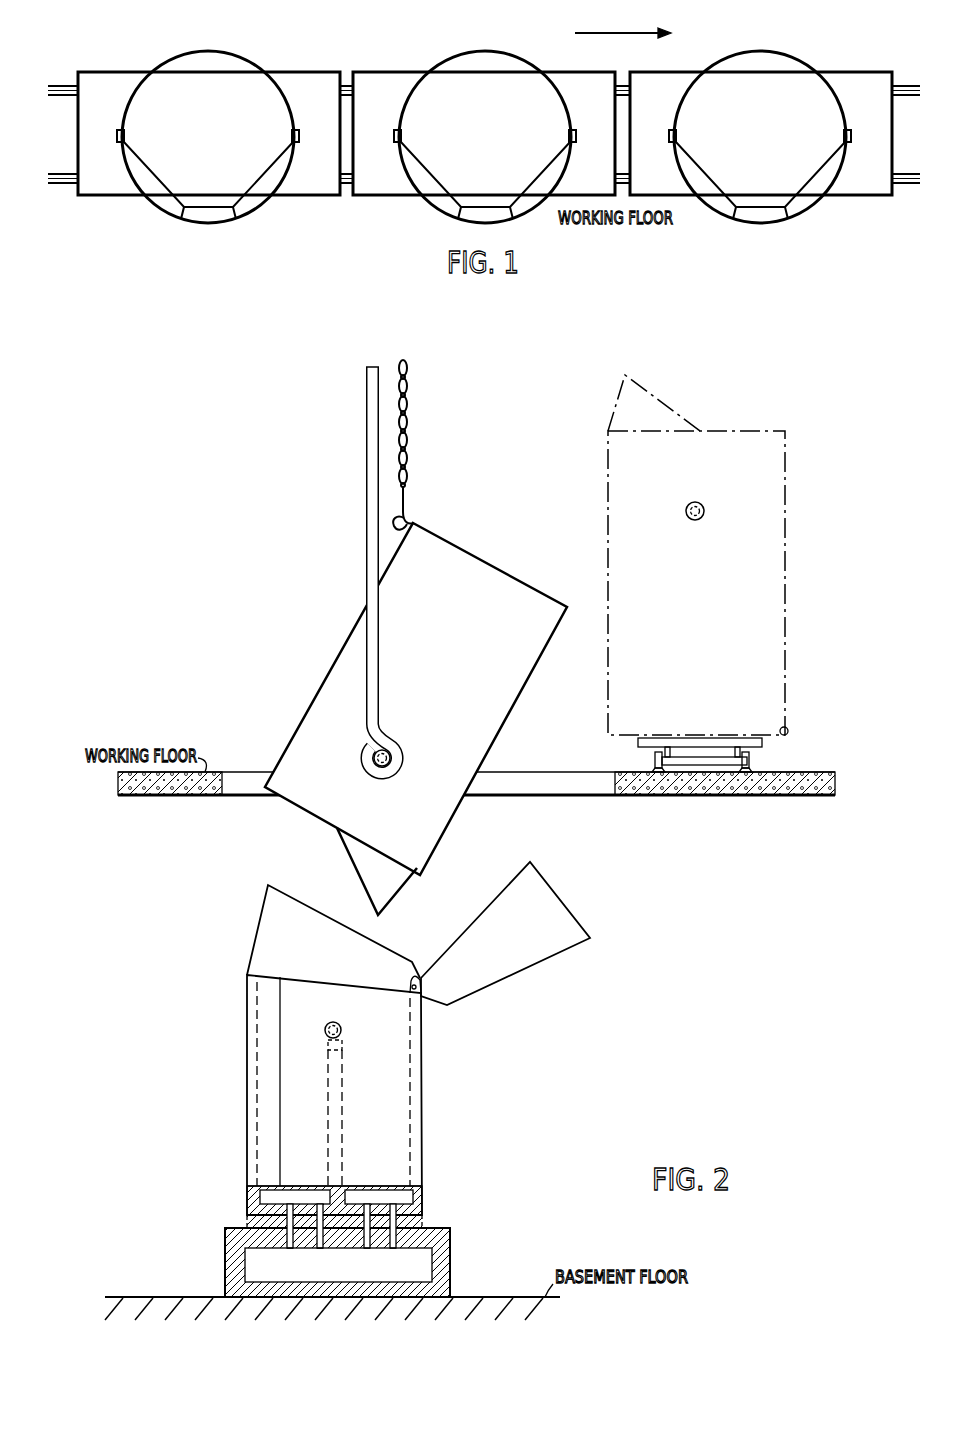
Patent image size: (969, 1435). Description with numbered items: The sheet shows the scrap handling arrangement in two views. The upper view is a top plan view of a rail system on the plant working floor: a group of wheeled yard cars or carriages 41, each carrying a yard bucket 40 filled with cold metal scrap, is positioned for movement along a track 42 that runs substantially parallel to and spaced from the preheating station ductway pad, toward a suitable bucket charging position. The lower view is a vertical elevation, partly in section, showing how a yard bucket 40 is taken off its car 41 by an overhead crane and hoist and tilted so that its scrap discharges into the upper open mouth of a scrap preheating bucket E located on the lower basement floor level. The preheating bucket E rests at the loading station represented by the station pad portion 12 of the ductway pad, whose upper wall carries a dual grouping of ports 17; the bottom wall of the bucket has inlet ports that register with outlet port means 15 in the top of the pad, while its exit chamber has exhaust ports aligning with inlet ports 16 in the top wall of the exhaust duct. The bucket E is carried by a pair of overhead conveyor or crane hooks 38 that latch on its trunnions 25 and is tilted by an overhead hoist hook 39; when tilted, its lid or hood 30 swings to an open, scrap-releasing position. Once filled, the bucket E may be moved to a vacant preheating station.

In FIG. 2, the station pad portion 12 is at (450, 1268).
In FIG. 2, the port means 15 is at (319, 1204).
In FIG. 2, the inlet ports 16 is at (393, 1204).
In FIG. 2, the dual grouping of ports 17 is at (393, 1248).
In FIG. 2, the trunnions 25 is at (342, 1030).
In FIG. 2, the lid or hood 30 is at (528, 960).
In FIG. 2, the overhead conveyor or crane hooks 38 is at (366, 533).
In FIG. 2, the overhead hoist hook 39 is at (405, 511).
In FIG. 1, the yard buckets 40 is at (196, 148).
In FIG. 2, the yard buckets 40 is at (424, 693).
In FIG. 1, the rail cars or carriages 41 is at (305, 190).
In FIG. 2, the rail cars or carriages 41 is at (641, 743).
In FIG. 1, the track 42 is at (66, 184).
In FIG. 2, the track 42 is at (752, 770).
In FIG. 2, the preheating scrap bucket E is at (380, 1118).